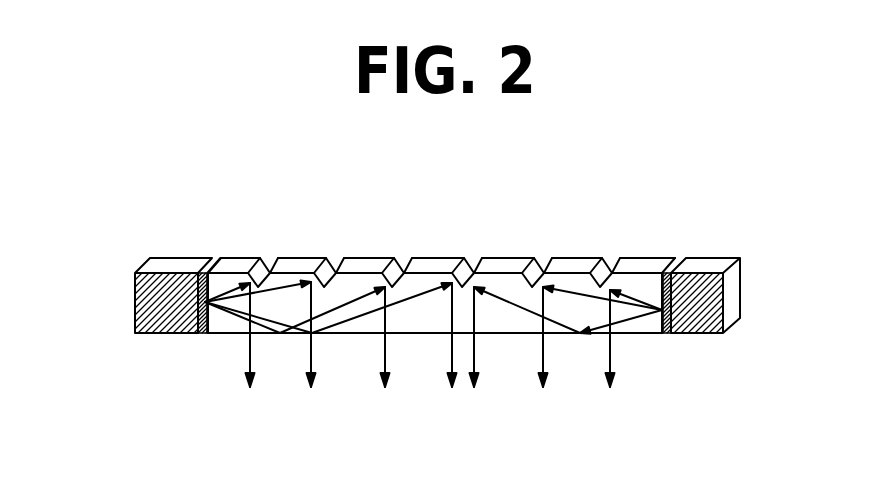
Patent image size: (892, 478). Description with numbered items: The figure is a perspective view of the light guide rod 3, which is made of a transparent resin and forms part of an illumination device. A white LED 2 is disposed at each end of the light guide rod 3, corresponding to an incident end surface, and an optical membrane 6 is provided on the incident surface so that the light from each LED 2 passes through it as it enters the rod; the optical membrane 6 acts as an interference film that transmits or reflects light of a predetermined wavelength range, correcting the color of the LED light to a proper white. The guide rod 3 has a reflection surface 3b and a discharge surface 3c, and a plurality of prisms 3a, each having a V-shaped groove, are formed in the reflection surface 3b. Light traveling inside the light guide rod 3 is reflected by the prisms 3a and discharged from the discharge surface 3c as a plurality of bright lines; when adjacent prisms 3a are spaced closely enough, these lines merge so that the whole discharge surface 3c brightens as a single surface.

The white LED 2 is at (160, 262).
The optical membrane 6 is at (200, 268).
The light guide rod 3 is at (531, 236).
The prism 3a is at (328, 259).
The reflection surface 3b is at (369, 259).
The discharge surface 3c is at (428, 335).